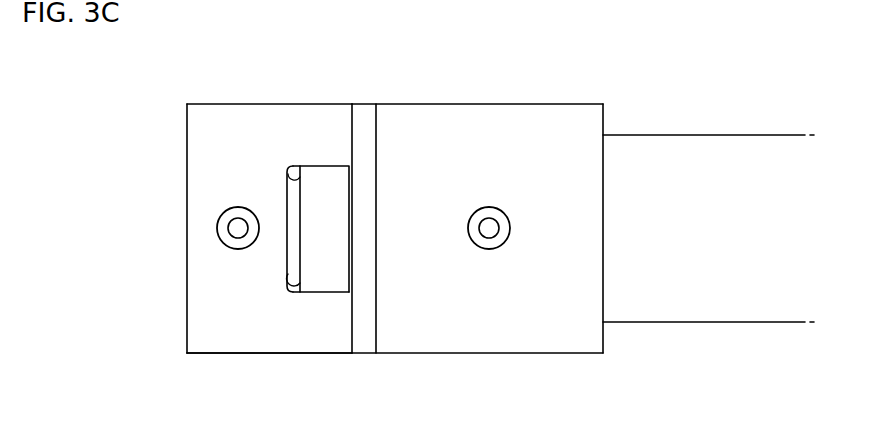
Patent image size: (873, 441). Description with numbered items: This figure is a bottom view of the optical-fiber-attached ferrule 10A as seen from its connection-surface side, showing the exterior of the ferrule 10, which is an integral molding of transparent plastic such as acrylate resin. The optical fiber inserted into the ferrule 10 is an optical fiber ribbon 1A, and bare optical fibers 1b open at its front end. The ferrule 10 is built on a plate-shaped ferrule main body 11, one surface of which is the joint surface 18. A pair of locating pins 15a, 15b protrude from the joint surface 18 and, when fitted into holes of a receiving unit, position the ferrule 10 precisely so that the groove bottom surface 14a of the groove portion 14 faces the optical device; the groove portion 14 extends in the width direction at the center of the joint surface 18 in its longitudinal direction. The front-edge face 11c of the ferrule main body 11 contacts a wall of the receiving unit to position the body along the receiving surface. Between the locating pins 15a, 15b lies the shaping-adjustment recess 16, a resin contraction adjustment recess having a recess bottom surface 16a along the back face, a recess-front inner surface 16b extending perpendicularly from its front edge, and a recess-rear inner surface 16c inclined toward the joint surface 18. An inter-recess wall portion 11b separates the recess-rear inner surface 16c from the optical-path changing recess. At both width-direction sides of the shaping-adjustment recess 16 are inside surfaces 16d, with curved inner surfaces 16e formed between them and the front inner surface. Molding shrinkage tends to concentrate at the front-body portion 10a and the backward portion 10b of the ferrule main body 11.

The optical fiber ribbon 1A is at (720, 321).
The bare optical fibers 1b is at (762, 323).
The optical-fiber-attached ferrule 10A is at (544, 91).
The ferrule 10 is at (588, 104).
The front-body portion 10a is at (193, 104).
The backward portion 10b is at (497, 104).
The ferrule main body 11 is at (603, 104).
The inter-recess wall portion 11b is at (605, 323).
The front-edge face 11c is at (188, 270).
The groove portion 14 is at (363, 340).
The groove bottom surface 14a is at (358, 116).
The locating pin 15a is at (218, 238).
The locating pin 15b is at (493, 255).
The shaping-adjustment recess 16 is at (316, 169).
The recess bottom surface 16a is at (282, 188).
The recess-front inner surface 16b is at (307, 292).
The recess-rear inner surface 16c is at (333, 282).
The inside surfaces 16d is at (353, 186).
The curved inner surfaces 16e is at (305, 177).
The joint surface 18 is at (267, 330).